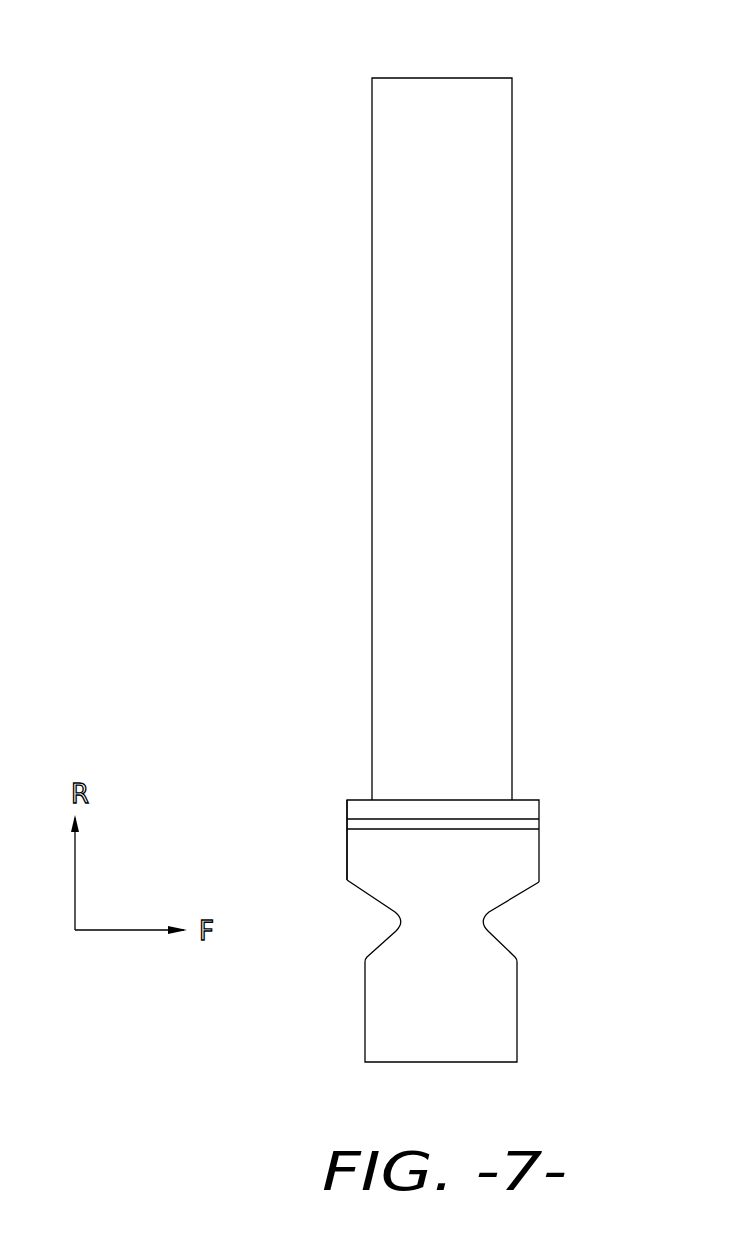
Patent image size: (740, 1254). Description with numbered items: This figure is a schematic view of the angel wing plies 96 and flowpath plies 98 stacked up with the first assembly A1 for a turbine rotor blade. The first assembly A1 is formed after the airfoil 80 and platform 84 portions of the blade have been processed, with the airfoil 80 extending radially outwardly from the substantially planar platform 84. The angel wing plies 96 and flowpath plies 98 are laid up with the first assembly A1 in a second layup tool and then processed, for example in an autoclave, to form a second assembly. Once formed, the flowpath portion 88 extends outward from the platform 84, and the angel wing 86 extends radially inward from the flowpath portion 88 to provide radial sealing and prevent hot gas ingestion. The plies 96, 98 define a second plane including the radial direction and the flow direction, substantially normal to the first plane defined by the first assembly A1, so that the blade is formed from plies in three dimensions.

The first assembly A1 is at (460, 78).
The airfoil 80 is at (487, 390).
The platform 84 is at (541, 811).
The angel wing 86 is at (342, 1022).
The flowpath portion 88 is at (330, 817).
The angel wing plies 96 is at (498, 1006).
The flowpath plies 98 is at (533, 825).